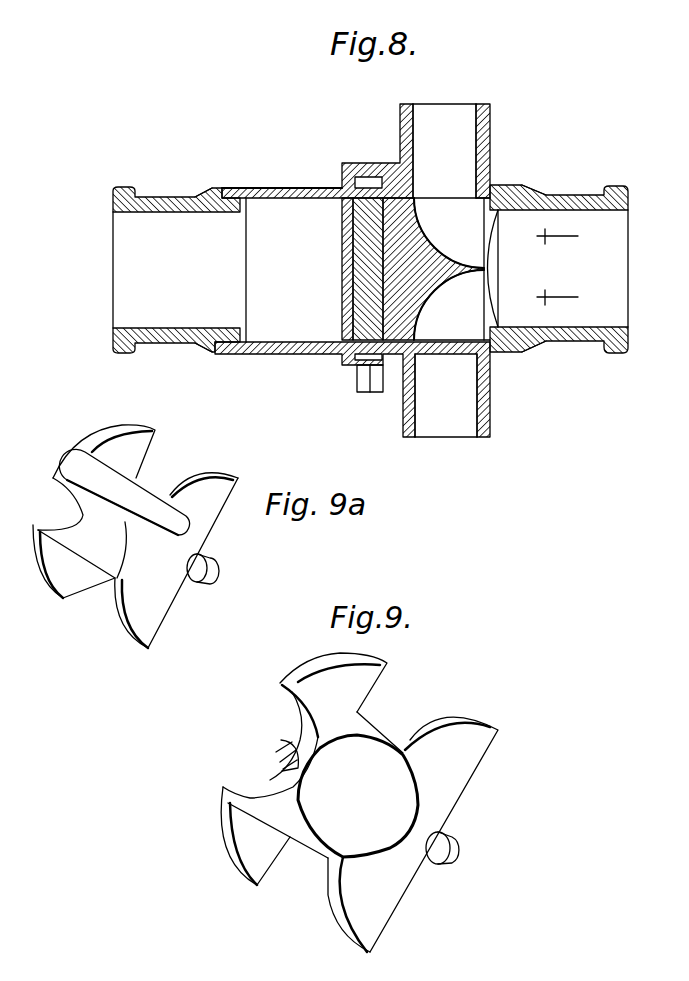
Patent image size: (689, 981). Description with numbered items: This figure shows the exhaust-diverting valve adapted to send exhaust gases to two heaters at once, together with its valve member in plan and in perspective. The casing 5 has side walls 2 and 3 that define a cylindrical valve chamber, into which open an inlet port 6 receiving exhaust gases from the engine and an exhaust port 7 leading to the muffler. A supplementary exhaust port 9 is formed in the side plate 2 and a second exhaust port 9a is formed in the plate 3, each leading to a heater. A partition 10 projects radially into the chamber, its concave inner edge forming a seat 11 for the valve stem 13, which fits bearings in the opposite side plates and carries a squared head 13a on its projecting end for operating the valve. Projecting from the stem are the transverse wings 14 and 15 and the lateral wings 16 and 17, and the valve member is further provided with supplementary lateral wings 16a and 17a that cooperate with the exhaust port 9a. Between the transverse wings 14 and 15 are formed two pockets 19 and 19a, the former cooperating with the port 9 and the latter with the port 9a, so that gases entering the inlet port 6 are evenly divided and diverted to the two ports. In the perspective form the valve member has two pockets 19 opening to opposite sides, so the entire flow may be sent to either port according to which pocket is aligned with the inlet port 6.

In FIG. 8, the side wall 2 is at (280, 189).
In FIG. 8, the side wall 3 is at (277, 350).
In FIG. 8, the casing 5 is at (233, 316).
In FIG. 8, the inlet port 6 is at (559, 269).
In FIG. 8, the exhaust port 7 is at (176, 270).
In FIG. 8, the supplementary exhaust port 9 is at (444, 151).
In FIG. 8, the second exhaust port 9a is at (446, 395).
In FIG. 8, the partition 10 is at (277, 270).
In FIG. 8, the seat 11 is at (350, 221).
In FIG. 8, the valve stem 13 is at (345, 292).
In FIG. 9, the valve stem 13 is at (458, 853).
In FIG. 8, the squared head 13a is at (365, 379).
In FIG. 9, the squared head 13a is at (278, 756).
In FIG. 9, the transverse wing 14 is at (375, 727).
In FIG. 9, the transverse wing 15 is at (292, 838).
In FIG. 9, the lateral wing 16 is at (434, 834).
In FIG. 9, the supplementary lateral wing 16a is at (333, 682).
In FIG. 9, the lateral wing 17 is at (350, 904).
In FIG. 9, the supplementary lateral wing 17a is at (255, 836).
In FIG. 8, the pocket 19 is at (448, 183).
In FIG. 9A, the pocket 19 is at (140, 487).
In FIG. 9, the pocket 19 is at (358, 796).
In FIG. 8, the pocket 19a is at (447, 357).
In FIG. 9, the pocket 19a is at (252, 786).